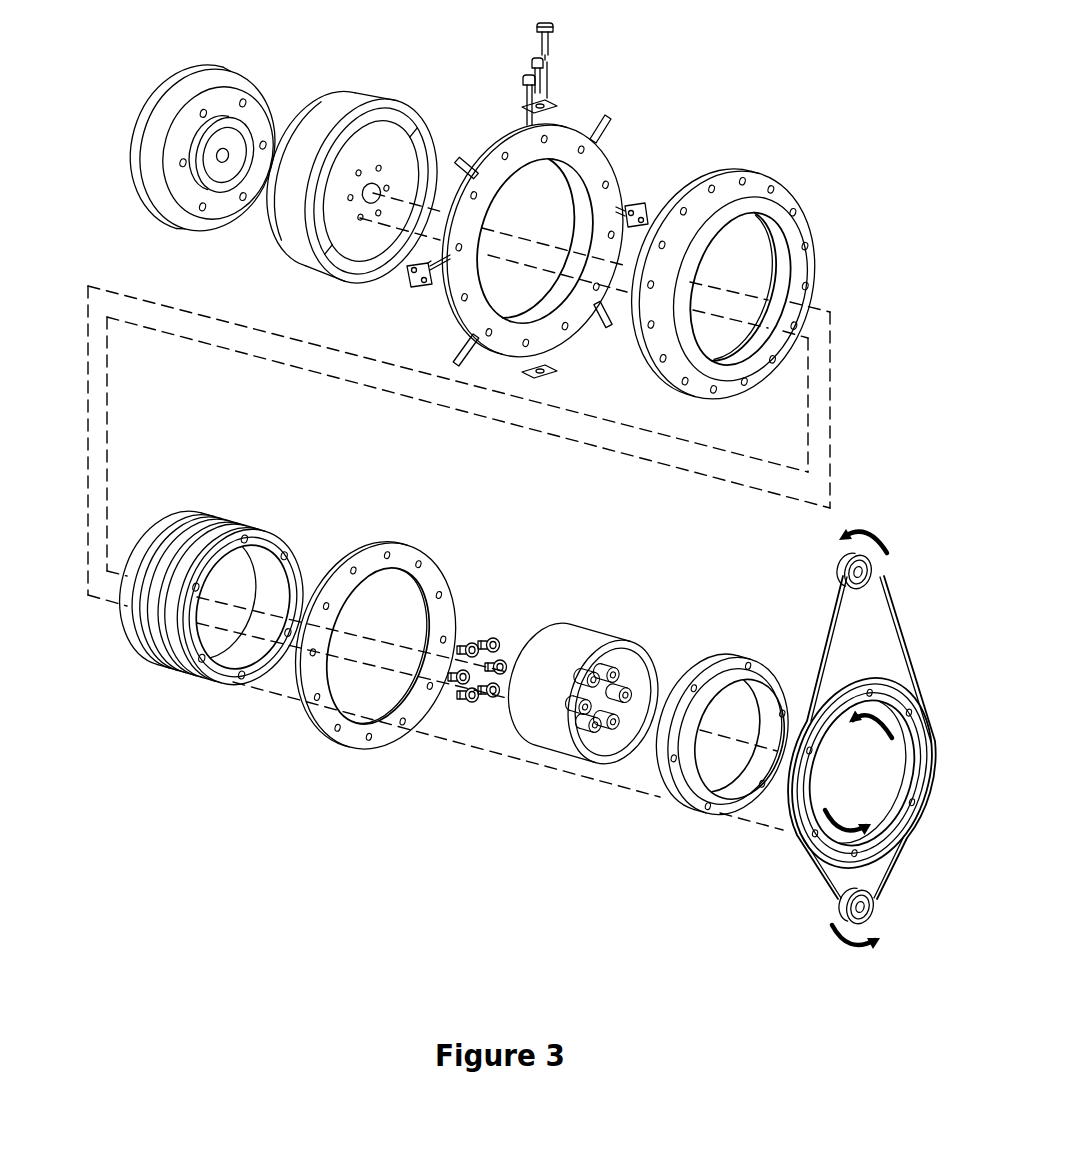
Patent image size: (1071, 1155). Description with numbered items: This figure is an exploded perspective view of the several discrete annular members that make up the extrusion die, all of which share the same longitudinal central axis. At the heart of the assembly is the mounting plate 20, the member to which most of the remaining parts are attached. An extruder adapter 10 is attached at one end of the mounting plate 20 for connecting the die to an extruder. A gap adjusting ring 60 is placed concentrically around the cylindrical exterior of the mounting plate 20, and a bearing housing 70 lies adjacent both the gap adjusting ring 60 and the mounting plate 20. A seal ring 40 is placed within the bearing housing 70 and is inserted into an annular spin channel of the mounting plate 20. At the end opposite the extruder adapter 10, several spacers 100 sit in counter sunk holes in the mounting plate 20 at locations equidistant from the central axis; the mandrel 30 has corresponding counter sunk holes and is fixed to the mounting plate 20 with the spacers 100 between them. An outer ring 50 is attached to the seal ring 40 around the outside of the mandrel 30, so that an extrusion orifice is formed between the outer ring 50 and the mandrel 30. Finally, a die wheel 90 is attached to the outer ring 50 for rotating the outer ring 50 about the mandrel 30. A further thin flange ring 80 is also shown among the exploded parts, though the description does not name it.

The extruder adapter 10 is at (252, 98).
The mounting plate 20 is at (373, 97).
The mandrel 30 is at (587, 632).
The seal ring 40 is at (228, 523).
The outer ring 50 is at (737, 653).
The gap adjusting ring 60 is at (567, 127).
The bearing housing 70 is at (747, 170).
The thin flange ring 80 is at (408, 545).
The die wheel 90 is at (850, 702).
The spacers 100 is at (495, 632).